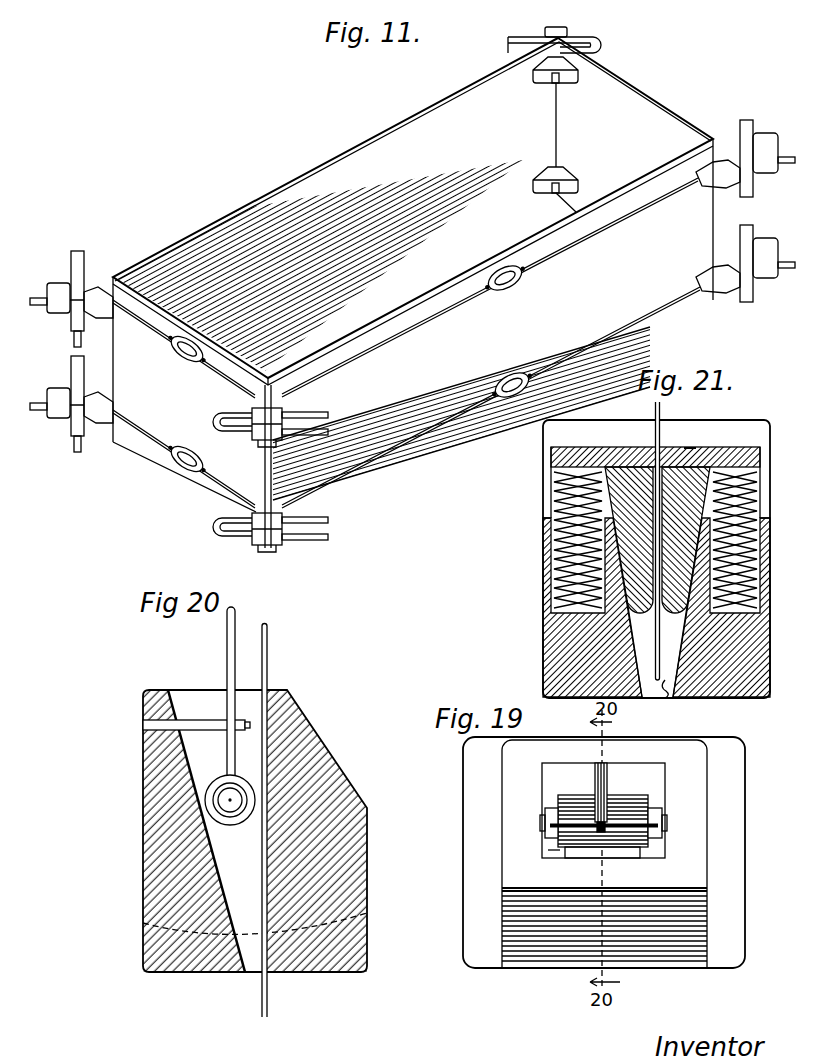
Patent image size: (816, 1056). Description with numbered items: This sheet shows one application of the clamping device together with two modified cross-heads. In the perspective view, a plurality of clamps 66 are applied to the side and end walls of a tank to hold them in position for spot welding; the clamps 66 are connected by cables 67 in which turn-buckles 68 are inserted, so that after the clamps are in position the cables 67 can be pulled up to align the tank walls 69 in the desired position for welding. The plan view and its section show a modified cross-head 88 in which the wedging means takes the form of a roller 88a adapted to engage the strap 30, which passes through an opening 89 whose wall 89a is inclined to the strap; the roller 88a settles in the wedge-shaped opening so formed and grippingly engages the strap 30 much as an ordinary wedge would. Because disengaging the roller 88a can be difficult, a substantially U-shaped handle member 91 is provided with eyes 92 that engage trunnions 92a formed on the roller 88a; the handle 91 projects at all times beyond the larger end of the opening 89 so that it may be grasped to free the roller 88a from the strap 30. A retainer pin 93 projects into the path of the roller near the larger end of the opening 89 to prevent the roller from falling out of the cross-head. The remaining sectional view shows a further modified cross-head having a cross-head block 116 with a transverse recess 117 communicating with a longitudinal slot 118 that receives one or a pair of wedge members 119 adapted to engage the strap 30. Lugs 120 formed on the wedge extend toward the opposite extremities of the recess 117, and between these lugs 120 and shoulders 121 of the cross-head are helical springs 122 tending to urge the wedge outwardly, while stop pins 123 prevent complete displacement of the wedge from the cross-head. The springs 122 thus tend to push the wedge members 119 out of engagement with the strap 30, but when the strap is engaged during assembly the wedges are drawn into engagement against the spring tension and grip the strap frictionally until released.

In FIG. 11, the clamp 66 is at (563, 33).
In FIG. 11, the cable 67 is at (573, 343).
In FIG. 11, the turn-buckle 68 is at (182, 447).
In FIG. 11, the tank wall 69 is at (241, 209).
In FIG. 21, the strap 30 is at (656, 430).
In FIG. 20, the strap 30 is at (267, 707).
In FIG. 19, the strap 30 is at (625, 842).
In FIG. 20, the cross-head 88 is at (355, 906).
In FIG. 19, the cross-head 88 is at (682, 752).
In FIG. 20, the roller 88a is at (255, 790).
In FIG. 19, the roller 88a is at (612, 810).
In FIG. 20, the opening 89 is at (248, 923).
In FIG. 19, the opening 89 is at (548, 850).
In FIG. 20, the inclined wall 89a is at (188, 763).
In FIG. 19, the inclined wall 89a is at (560, 770).
In FIG. 20, the handle member 91 is at (236, 653).
In FIG. 19, the handle member 91 is at (584, 828).
In FIG. 20, the eye 92 is at (234, 818).
In FIG. 19, the eye 92 is at (650, 810).
In FIG. 20, the trunnion 92a is at (228, 800).
In FIG. 19, the trunnion 92a is at (671, 860).
In FIG. 20, the retainer pin 93 is at (188, 721).
In FIG. 19, the retainer pin 93 is at (610, 810).
In FIG. 21, the cross-head block 116 is at (552, 636).
In FIG. 21, the transverse recess 117 is at (552, 481).
In FIG. 21, the longitudinal slot 118 is at (664, 692).
In FIG. 21, the wedge member 119 is at (630, 480).
In FIG. 21, the lug 120 is at (551, 455).
In FIG. 21, the shoulder 121 is at (548, 516).
In FIG. 21, the helical spring 122 is at (551, 501).
In FIG. 21, the stop pin 123 is at (690, 453).